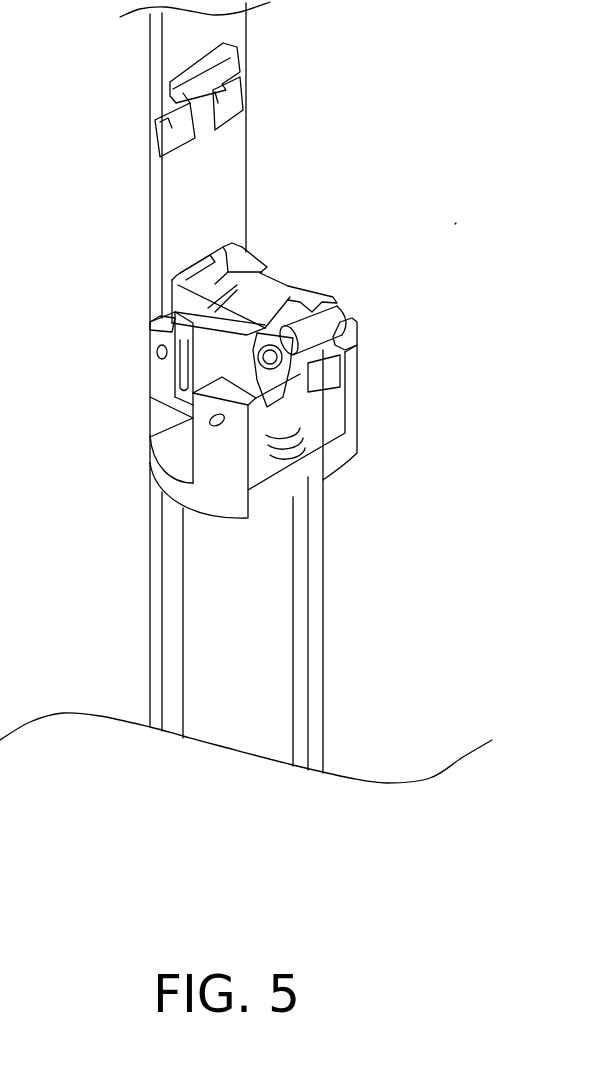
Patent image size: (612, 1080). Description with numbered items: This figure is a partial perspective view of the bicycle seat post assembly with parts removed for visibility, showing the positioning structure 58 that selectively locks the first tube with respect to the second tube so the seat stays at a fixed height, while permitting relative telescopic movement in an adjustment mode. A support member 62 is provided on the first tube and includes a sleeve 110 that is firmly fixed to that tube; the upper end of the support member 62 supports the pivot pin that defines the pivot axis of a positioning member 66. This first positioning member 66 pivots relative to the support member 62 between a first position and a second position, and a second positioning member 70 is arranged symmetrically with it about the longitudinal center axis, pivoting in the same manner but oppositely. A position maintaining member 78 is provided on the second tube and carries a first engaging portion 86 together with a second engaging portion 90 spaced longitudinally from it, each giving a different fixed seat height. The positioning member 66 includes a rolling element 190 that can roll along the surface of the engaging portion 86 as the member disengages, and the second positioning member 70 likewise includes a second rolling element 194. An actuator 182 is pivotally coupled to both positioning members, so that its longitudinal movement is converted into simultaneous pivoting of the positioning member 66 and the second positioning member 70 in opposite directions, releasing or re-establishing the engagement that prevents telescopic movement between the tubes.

The positioning structure 58 is at (457, 221).
The support member 62 is at (349, 443).
The positioning member 66 is at (253, 256).
The second positioning member 70 is at (321, 288).
The position maintaining member 78 is at (233, 177).
The engaging portion 86 is at (225, 246).
The second engaging portion 90 is at (200, 82).
The sleeve 110 is at (222, 573).
The actuator 182 is at (163, 380).
The rolling element 190 is at (210, 262).
The second rolling element 194 is at (312, 335).